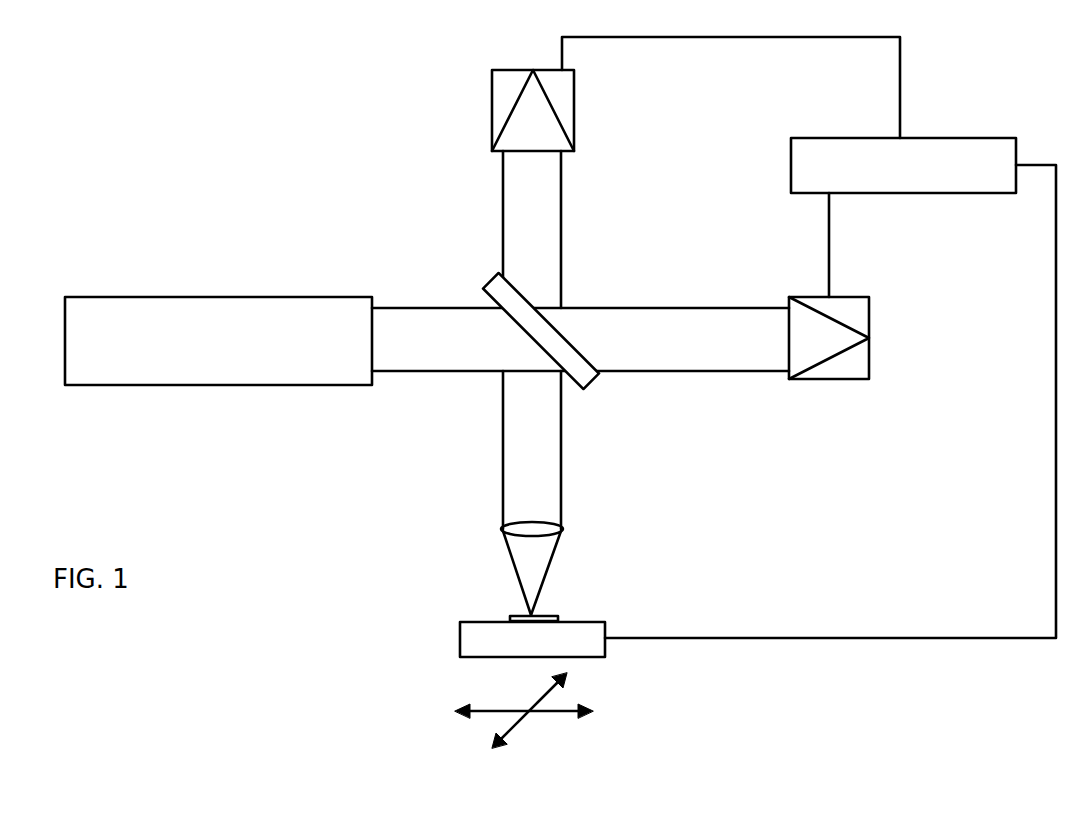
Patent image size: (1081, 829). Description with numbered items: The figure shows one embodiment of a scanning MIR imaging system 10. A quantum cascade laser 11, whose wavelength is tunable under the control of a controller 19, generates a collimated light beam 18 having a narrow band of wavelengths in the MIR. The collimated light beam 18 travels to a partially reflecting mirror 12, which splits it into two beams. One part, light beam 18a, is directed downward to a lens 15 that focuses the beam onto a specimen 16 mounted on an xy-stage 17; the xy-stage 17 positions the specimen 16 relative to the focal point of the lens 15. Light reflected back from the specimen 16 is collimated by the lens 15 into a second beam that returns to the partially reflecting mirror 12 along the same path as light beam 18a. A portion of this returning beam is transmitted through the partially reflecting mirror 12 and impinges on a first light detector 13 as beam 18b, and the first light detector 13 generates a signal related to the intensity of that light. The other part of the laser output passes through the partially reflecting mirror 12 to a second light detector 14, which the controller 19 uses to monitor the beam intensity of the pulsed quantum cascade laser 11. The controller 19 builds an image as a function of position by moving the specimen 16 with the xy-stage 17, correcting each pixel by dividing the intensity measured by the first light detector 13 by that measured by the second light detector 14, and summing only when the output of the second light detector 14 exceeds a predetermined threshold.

The imaging system 10 is at (214, 172).
The quantum cascade laser 11 is at (215, 386).
The partially reflecting mirror 12 is at (586, 383).
The first light detector 13 is at (574, 110).
The second light detector 14 is at (869, 362).
The lens 15 is at (563, 532).
The specimen 16 is at (518, 616).
The xy-stage 17 is at (460, 634).
The collimated light beam 18 is at (421, 312).
The light beam 18a is at (505, 433).
The beam 18b is at (555, 219).
The controller 19 is at (945, 195).